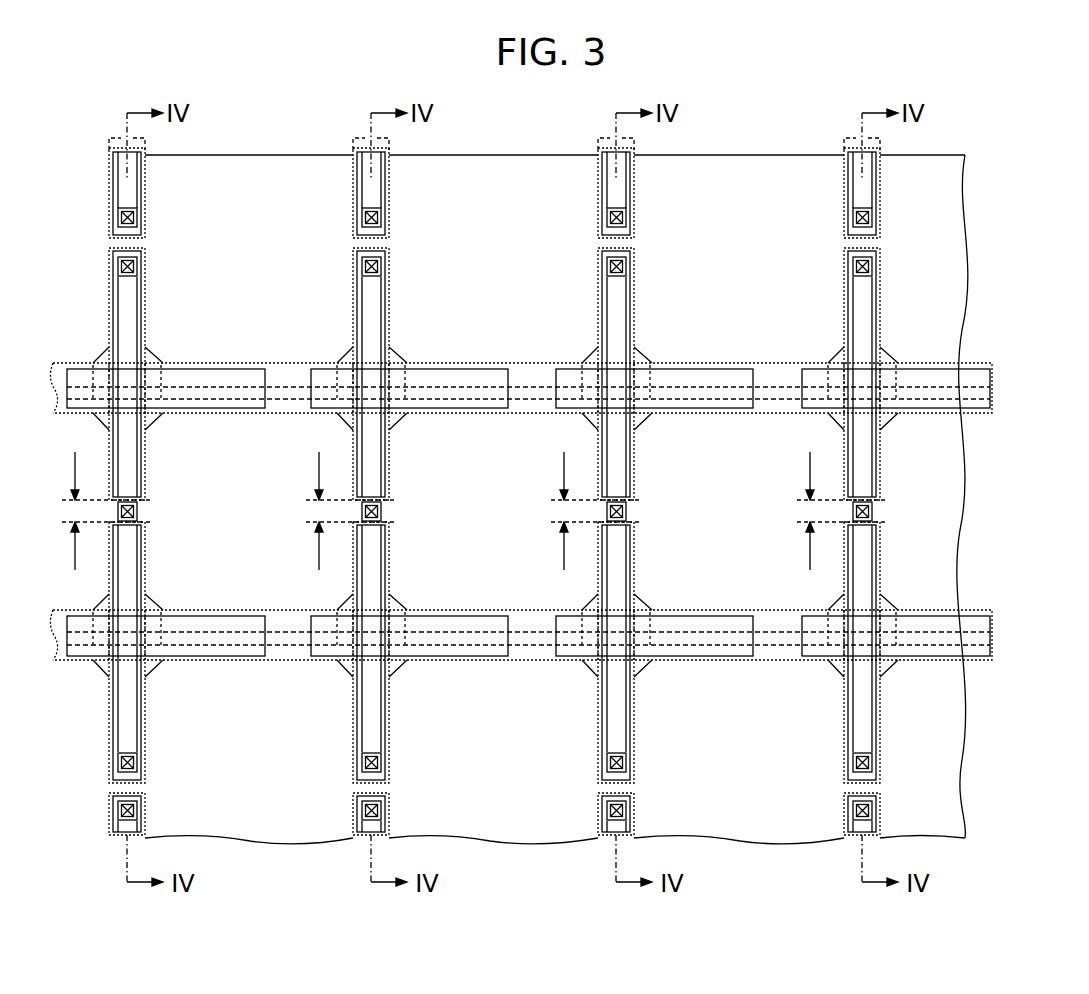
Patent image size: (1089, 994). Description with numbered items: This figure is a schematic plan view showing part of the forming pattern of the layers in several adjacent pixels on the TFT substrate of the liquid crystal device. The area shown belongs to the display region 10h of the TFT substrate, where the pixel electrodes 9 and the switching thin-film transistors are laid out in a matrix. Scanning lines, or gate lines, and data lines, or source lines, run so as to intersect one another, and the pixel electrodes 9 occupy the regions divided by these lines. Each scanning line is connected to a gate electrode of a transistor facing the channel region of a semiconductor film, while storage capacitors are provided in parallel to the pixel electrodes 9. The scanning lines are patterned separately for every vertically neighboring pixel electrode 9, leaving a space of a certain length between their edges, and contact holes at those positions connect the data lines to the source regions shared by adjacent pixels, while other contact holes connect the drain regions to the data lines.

The pixel electrode 9 is at (750, 168).
The display region 10h is at (985, 149).